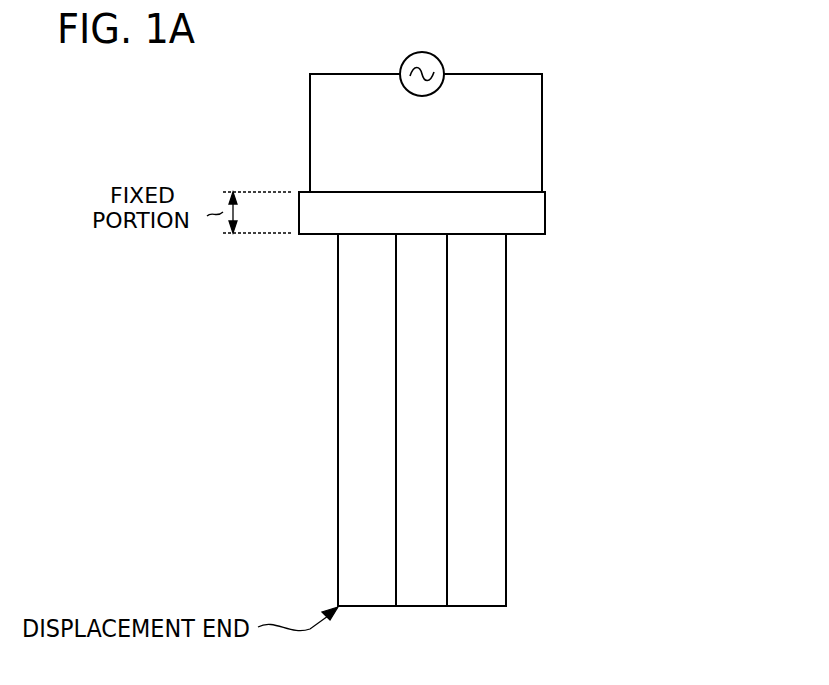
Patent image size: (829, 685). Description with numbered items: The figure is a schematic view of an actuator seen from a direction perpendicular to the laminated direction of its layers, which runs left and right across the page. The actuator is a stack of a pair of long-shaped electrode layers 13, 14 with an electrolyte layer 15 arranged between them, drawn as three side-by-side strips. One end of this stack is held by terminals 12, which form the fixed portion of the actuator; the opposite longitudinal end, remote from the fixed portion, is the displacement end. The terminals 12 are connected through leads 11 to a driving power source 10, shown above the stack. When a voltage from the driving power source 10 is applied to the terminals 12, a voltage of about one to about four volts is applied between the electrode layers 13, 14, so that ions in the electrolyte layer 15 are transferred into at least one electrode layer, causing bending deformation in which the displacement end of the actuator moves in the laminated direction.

The driving power source 10 is at (407, 57).
The leads 11 is at (505, 74).
The terminals 12 is at (325, 191).
The electrode layer 13 is at (353, 282).
The electrode layer 14 is at (470, 342).
The electrolyte layer 15 is at (428, 402).